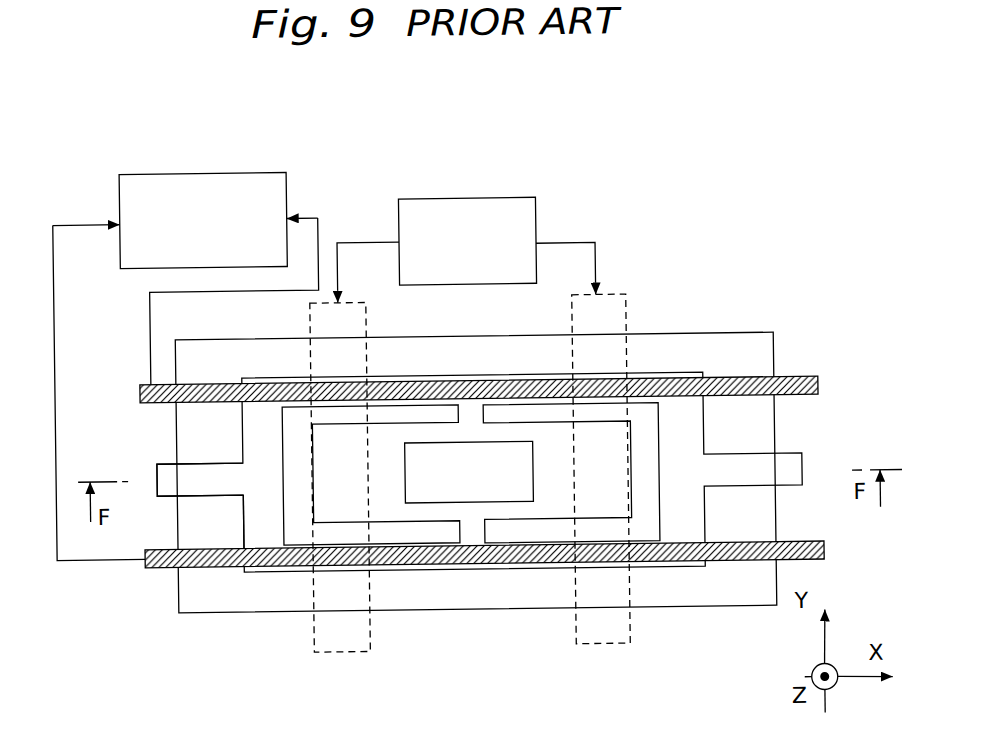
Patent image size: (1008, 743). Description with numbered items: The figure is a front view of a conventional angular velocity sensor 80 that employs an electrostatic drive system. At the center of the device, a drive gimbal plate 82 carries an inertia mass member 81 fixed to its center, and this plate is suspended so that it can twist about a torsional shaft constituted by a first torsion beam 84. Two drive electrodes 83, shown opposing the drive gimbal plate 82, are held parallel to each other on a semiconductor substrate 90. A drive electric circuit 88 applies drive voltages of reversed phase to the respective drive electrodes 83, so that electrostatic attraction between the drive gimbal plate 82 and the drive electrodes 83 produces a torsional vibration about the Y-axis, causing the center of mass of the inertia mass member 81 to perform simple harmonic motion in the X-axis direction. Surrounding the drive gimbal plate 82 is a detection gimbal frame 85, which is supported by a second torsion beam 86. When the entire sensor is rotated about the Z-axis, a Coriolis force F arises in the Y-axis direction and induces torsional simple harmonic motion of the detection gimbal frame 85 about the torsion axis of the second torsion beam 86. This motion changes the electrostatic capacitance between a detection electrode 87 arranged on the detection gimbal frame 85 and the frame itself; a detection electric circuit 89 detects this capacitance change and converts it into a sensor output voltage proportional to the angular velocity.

The angular velocity sensor 80 is at (486, 490).
The inertia mass member 81 is at (505, 453).
The drive gimbal plate 82 is at (441, 517).
The drive electrodes 83 is at (343, 650).
The first torsion beam 84 is at (476, 532).
The detection gimbal frame 85 is at (246, 532).
The second torsion beam 86 is at (207, 464).
The detection electrode 87 is at (819, 398).
The drive electric circuit 88 is at (477, 199).
The detection electric circuit 89 is at (211, 168).
The semiconductor substrate 90 is at (710, 348).